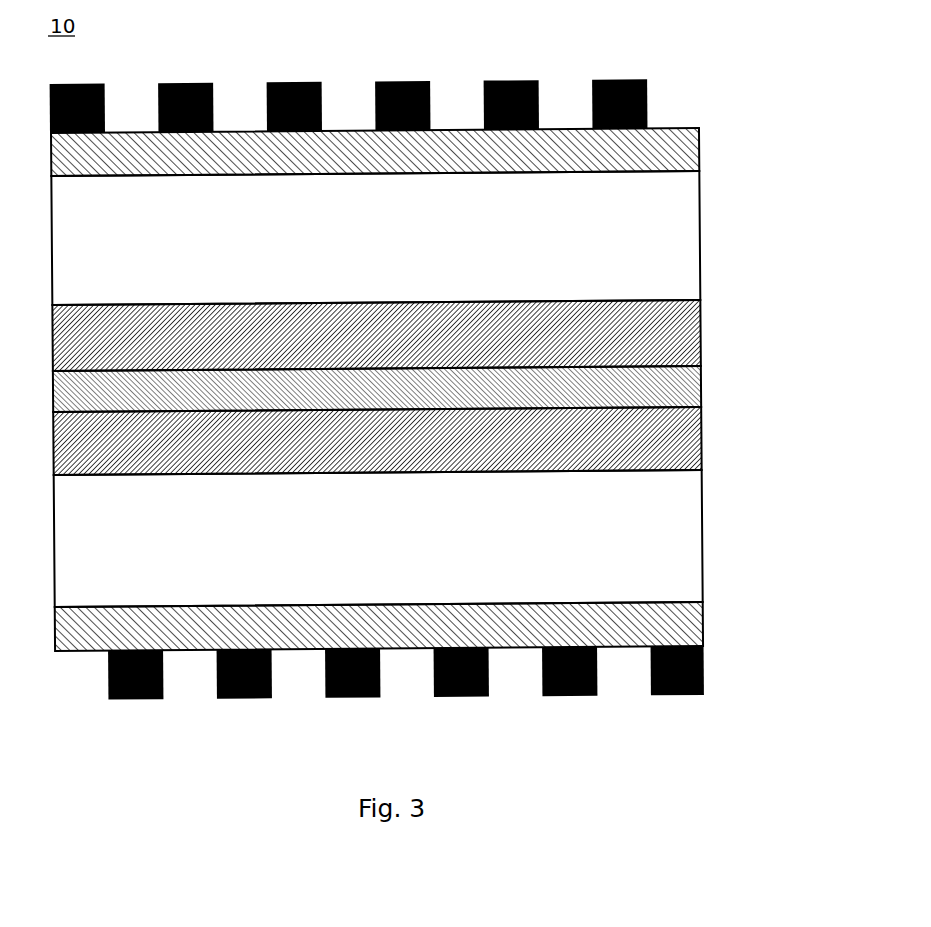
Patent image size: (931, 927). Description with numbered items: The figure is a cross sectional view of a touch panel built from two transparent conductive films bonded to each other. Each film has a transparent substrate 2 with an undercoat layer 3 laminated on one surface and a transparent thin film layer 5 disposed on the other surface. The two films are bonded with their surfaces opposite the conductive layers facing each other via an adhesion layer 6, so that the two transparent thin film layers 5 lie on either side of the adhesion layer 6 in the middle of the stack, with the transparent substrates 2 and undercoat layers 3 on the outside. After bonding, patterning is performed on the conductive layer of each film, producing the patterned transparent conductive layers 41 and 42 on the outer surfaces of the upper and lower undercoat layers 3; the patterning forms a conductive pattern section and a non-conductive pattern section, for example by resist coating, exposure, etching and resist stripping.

The transparent conductive layer 41 is at (648, 99).
The transparent conductive layer 42 is at (702, 675).
The undercoat layer 3 is at (699, 144).
The transparent substrate 2 is at (677, 233).
The transparent thin film layer 5 is at (700, 330).
The adhesion layer 6 is at (700, 392).